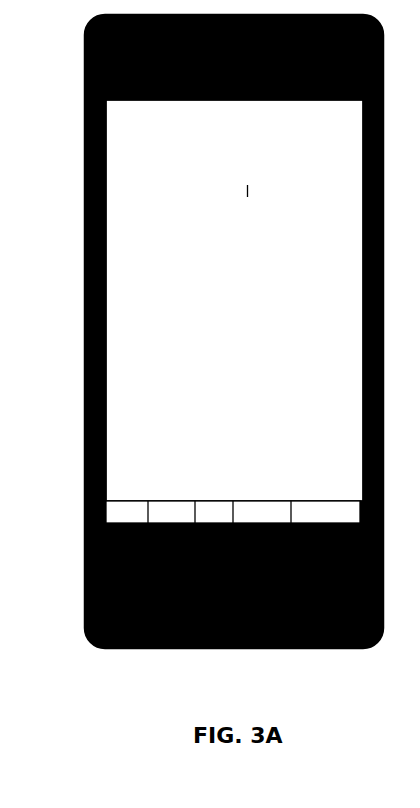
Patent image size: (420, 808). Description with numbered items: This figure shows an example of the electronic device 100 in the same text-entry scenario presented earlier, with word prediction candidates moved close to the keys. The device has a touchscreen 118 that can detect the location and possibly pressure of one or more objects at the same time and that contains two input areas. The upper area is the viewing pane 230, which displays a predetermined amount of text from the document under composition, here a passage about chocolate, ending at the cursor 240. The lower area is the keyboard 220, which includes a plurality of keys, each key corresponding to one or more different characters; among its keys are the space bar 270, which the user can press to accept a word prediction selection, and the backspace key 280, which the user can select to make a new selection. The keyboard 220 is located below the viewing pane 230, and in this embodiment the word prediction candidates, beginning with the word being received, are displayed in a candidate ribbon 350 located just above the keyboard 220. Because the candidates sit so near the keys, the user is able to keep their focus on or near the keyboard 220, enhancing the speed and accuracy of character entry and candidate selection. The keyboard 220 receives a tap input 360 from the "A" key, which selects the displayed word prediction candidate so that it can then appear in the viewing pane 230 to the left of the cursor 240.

The electronic device 100 is at (218, 331).
The touchscreen 118 is at (118, 425).
The viewing pane 230 is at (112, 258).
The cursor 240 is at (267, 158).
The candidate ribbon 350 is at (188, 508).
The keyboard 220 is at (220, 626).
The tap input 360 is at (184, 608).
The backspace key 280 is at (385, 594).
The space bar 270 is at (238, 642).